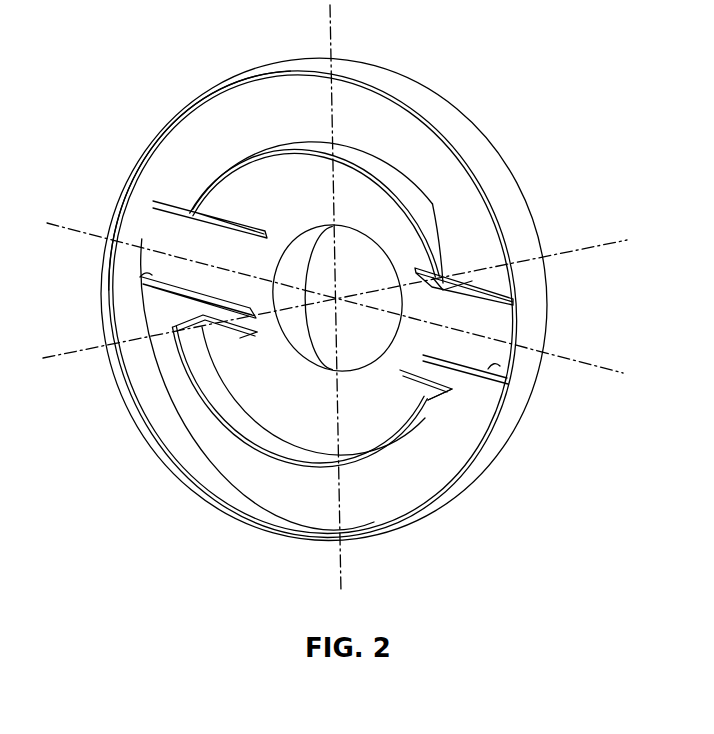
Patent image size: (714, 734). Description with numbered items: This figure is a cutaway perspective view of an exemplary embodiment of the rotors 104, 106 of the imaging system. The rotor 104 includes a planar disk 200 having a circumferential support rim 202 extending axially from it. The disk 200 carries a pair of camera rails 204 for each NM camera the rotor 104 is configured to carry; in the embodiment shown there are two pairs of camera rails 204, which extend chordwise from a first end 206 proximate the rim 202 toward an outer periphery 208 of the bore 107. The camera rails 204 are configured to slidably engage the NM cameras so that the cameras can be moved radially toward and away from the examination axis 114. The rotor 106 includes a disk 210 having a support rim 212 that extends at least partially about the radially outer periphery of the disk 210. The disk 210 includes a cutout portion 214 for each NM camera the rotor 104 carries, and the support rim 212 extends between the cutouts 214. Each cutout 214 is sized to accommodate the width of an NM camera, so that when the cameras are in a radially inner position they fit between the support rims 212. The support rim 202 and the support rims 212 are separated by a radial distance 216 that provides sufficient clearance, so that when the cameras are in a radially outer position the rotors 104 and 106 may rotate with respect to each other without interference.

The rotor 104 is at (402, 88).
The rotor 106 is at (422, 423).
The bore 107 is at (388, 337).
The examination axis 114 is at (595, 242).
The planar disk 200 is at (305, 130).
The circumferential support rim 202 is at (117, 385).
The camera rails 204 is at (172, 200).
The first end 206 is at (138, 273).
The outer periphery 208 is at (320, 373).
The disk 210 is at (321, 190).
The support rim 212 is at (343, 148).
The cutout portion 214 is at (257, 332).
The radial distance 216 is at (180, 112).